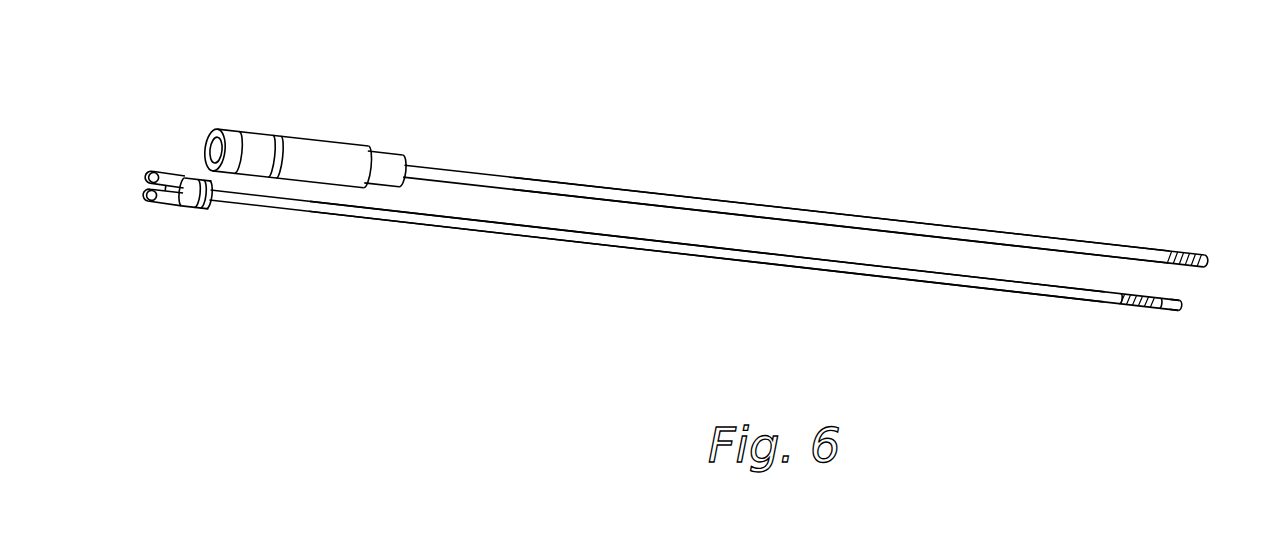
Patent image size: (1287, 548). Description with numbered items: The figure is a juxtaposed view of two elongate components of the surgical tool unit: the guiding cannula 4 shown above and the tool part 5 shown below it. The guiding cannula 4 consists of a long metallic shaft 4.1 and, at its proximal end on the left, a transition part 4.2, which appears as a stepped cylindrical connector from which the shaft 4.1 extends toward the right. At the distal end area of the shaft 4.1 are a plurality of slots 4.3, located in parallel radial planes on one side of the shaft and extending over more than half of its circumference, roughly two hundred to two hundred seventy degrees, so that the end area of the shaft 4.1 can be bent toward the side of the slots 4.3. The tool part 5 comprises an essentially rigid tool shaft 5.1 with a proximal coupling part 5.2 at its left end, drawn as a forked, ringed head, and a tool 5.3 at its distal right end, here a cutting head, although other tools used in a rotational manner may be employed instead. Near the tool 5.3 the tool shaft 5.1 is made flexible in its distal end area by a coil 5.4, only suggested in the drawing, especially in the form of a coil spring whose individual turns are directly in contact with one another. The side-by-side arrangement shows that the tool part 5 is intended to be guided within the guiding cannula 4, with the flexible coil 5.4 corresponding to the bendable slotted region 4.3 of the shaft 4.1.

The guiding cannula 4 is at (670, 178).
The shaft 4.1 is at (763, 212).
The transition part 4.2 is at (333, 124).
The slots 4.3 is at (1197, 269).
The tool part 5 is at (708, 278).
The tool shaft 5.1 is at (538, 238).
The coupling part 5.2 is at (182, 210).
The tool 5.3 is at (1183, 310).
The coil 5.4 is at (1126, 313).